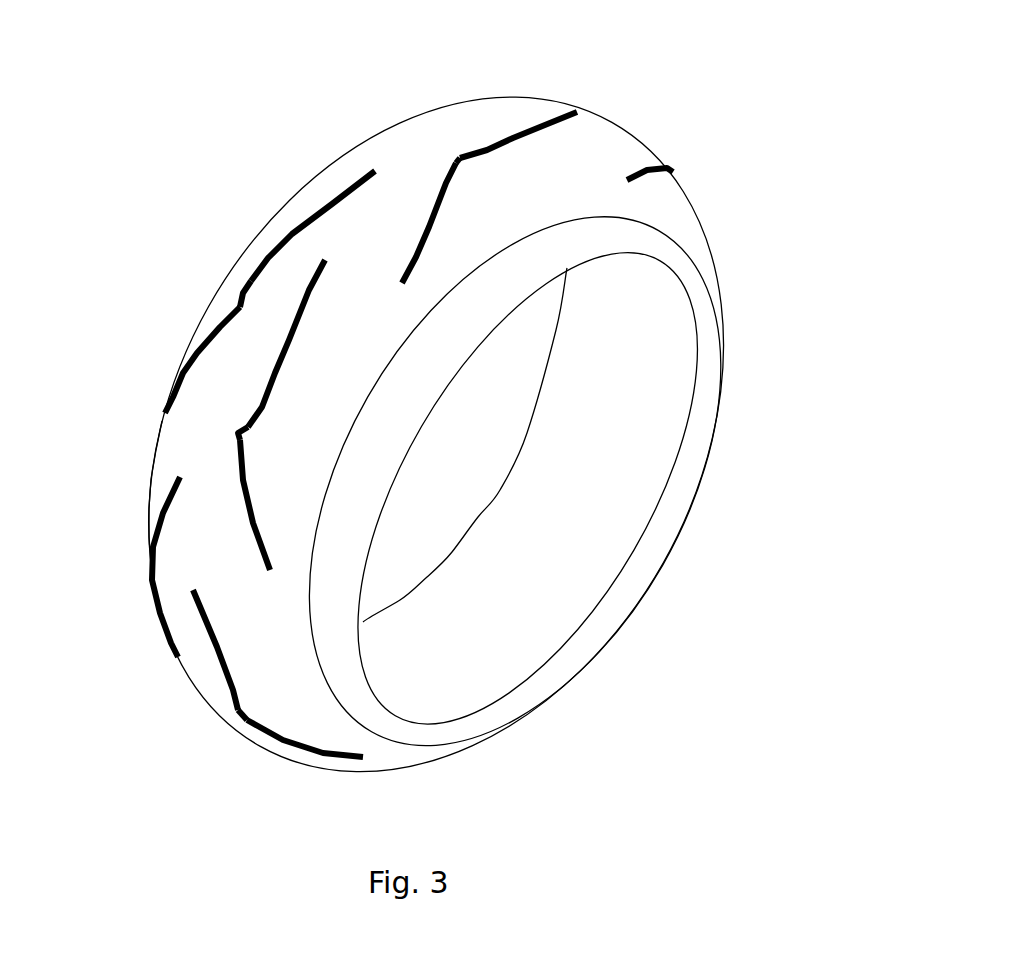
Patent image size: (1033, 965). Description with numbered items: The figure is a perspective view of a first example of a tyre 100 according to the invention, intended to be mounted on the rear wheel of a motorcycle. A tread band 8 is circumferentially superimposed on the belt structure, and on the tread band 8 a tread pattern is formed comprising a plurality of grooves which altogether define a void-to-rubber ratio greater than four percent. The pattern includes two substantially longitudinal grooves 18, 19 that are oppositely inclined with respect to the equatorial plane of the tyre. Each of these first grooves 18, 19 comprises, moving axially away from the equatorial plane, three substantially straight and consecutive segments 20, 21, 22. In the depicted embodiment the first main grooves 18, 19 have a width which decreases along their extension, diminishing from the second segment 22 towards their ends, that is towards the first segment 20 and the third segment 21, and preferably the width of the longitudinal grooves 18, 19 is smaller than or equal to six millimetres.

The tire 100 is at (436, 437).
The tread band 8 is at (627, 122).
The first longitudinal groove 18 is at (376, 430).
The first longitudinal groove 19 is at (274, 249).
The first segment 20 is at (337, 190).
The third segment 21 is at (252, 293).
The second segment 22 is at (183, 367).